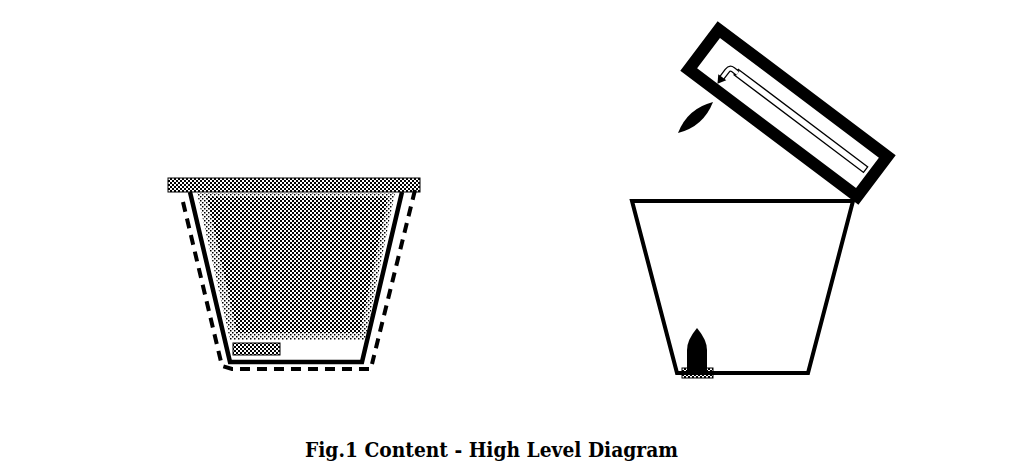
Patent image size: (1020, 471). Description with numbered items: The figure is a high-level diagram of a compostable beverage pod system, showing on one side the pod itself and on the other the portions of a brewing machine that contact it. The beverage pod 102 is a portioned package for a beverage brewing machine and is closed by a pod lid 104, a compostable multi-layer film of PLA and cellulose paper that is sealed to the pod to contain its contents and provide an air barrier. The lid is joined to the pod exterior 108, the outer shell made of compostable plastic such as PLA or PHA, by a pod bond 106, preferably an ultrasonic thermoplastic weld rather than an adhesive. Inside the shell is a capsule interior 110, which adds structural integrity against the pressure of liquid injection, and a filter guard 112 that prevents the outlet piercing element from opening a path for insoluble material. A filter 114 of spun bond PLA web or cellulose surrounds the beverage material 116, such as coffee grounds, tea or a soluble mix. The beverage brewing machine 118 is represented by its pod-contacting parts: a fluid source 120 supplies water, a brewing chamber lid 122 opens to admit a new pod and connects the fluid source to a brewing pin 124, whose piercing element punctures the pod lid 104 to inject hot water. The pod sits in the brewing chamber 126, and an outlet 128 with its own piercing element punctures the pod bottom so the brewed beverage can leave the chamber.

The beverage pod 102 is at (255, 250).
The pod lid 104 is at (272, 175).
The pod bond 106 is at (413, 180).
The pod exterior 108 is at (202, 248).
The capsule interior 110 is at (197, 297).
The filter guard 112 is at (232, 350).
The filter 114 is at (397, 233).
The beverage material 116 is at (365, 273).
The beverage brewing machine 118 is at (726, 116).
The fluid source 120 is at (880, 180).
The brewing chamber lid 122 is at (785, 57).
The brewing pin 124 is at (680, 108).
The brewing chamber 126 is at (683, 297).
The outlet 128 is at (700, 383).